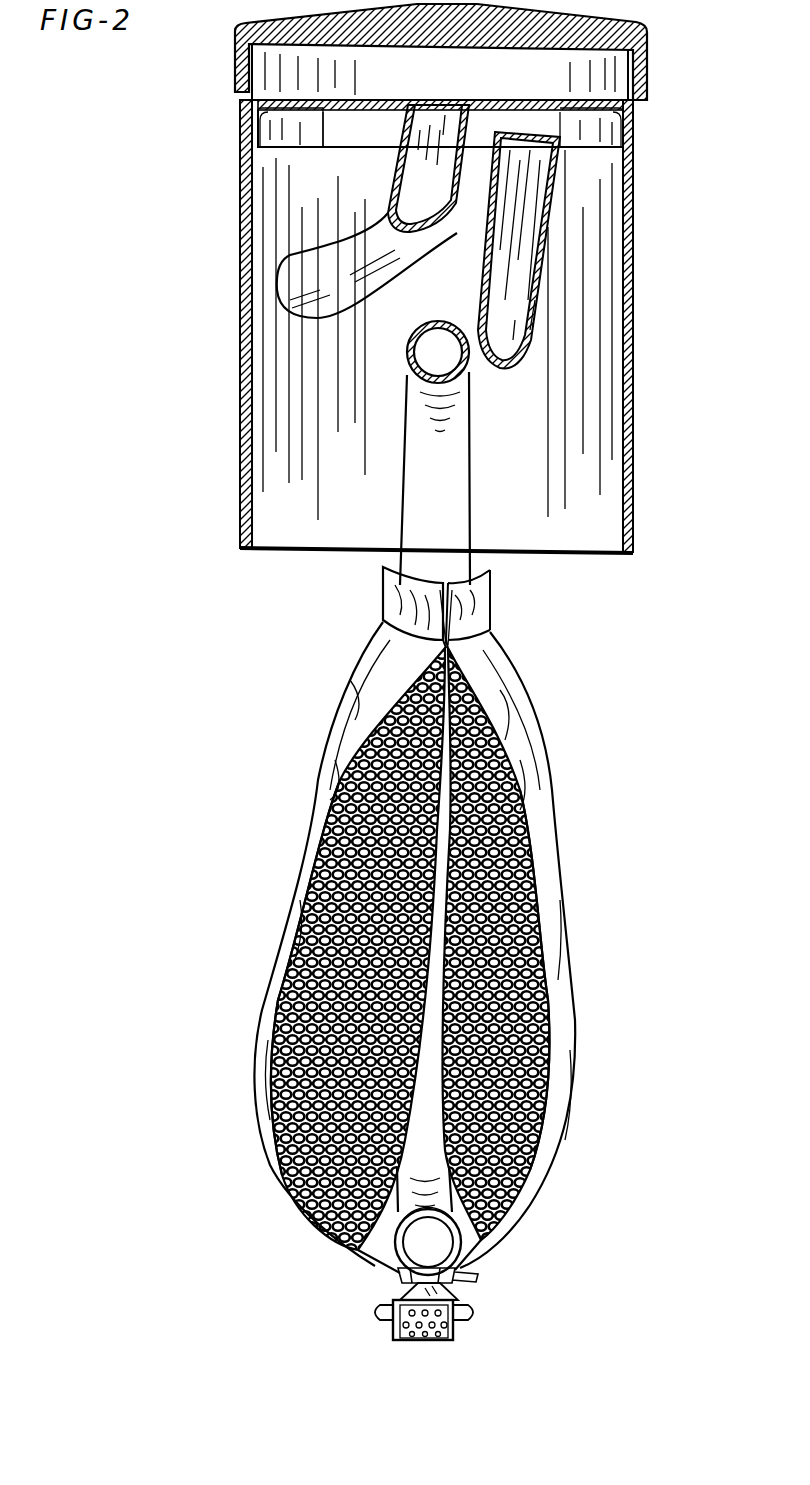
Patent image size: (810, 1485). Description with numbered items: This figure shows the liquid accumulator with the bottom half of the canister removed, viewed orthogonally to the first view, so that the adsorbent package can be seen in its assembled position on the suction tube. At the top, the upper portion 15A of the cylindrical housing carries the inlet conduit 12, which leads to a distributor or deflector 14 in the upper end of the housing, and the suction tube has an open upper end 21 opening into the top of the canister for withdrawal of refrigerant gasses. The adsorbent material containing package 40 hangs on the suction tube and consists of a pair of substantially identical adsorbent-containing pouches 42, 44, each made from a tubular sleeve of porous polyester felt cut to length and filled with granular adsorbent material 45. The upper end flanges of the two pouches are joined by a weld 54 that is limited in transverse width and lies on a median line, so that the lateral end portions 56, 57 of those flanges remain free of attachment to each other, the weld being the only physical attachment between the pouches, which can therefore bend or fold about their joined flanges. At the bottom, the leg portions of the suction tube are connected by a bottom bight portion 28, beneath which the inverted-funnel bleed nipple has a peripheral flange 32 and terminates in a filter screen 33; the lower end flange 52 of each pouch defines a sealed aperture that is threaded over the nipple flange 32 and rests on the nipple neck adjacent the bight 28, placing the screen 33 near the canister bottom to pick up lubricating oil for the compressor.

The inlet conduit 12 is at (377, 268).
The distributor or deflector 14 is at (373, 100).
The upper portion of housing 15A is at (635, 277).
The open upper end of suction tube 21 is at (550, 198).
The bottom bight portion 28 is at (477, 1257).
The peripheral flange 32 is at (475, 1307).
The filter screen 33 is at (393, 1337).
The adsorbent material containing package 40 is at (436, 983).
The adsorbent-containing pouch 42 is at (545, 906).
The adsorbent-containing pouch 44 is at (292, 948).
The granular adsorbent material 45 is at (548, 968).
The lower end flange 52 is at (373, 1267).
The weld 54 is at (457, 622).
The lateral end portion of flange 56 is at (483, 593).
The lateral end portion of flange 57 is at (383, 603).